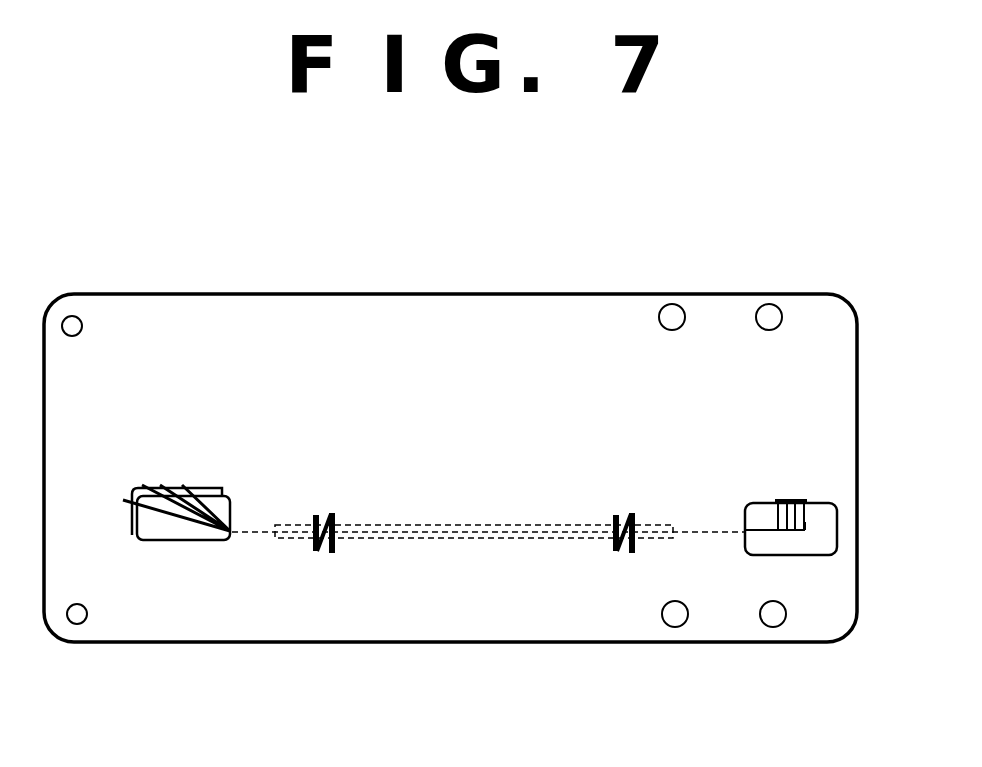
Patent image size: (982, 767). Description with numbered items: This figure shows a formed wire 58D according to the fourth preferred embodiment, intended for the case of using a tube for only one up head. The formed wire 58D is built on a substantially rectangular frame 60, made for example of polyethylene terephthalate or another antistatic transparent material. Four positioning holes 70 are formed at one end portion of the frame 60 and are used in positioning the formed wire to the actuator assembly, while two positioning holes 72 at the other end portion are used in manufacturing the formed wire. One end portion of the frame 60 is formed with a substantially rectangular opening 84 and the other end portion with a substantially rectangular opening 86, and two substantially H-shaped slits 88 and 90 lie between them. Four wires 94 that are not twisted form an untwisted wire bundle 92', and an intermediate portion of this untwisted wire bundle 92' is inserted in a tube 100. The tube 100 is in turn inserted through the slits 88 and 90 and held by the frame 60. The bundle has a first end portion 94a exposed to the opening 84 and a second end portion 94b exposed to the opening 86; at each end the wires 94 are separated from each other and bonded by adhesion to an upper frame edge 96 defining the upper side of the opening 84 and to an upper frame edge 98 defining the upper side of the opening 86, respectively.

The formed wire 58D is at (484, 274).
The frame 60 is at (455, 643).
The positioning holes 70 is at (672, 304).
The positioning holes 72 is at (72, 316).
The opening 84 is at (817, 543).
The opening 86 is at (203, 540).
The slit 88 is at (625, 555).
The slit 90 is at (325, 557).
The untwisted wire bundle 92' is at (488, 498).
The wires 94 is at (762, 532).
The first end portion 94a is at (807, 522).
The second end portion 94b is at (150, 512).
The upper frame edge 96 is at (792, 500).
The upper frame edge 98 is at (132, 517).
The tube 100 is at (470, 527).